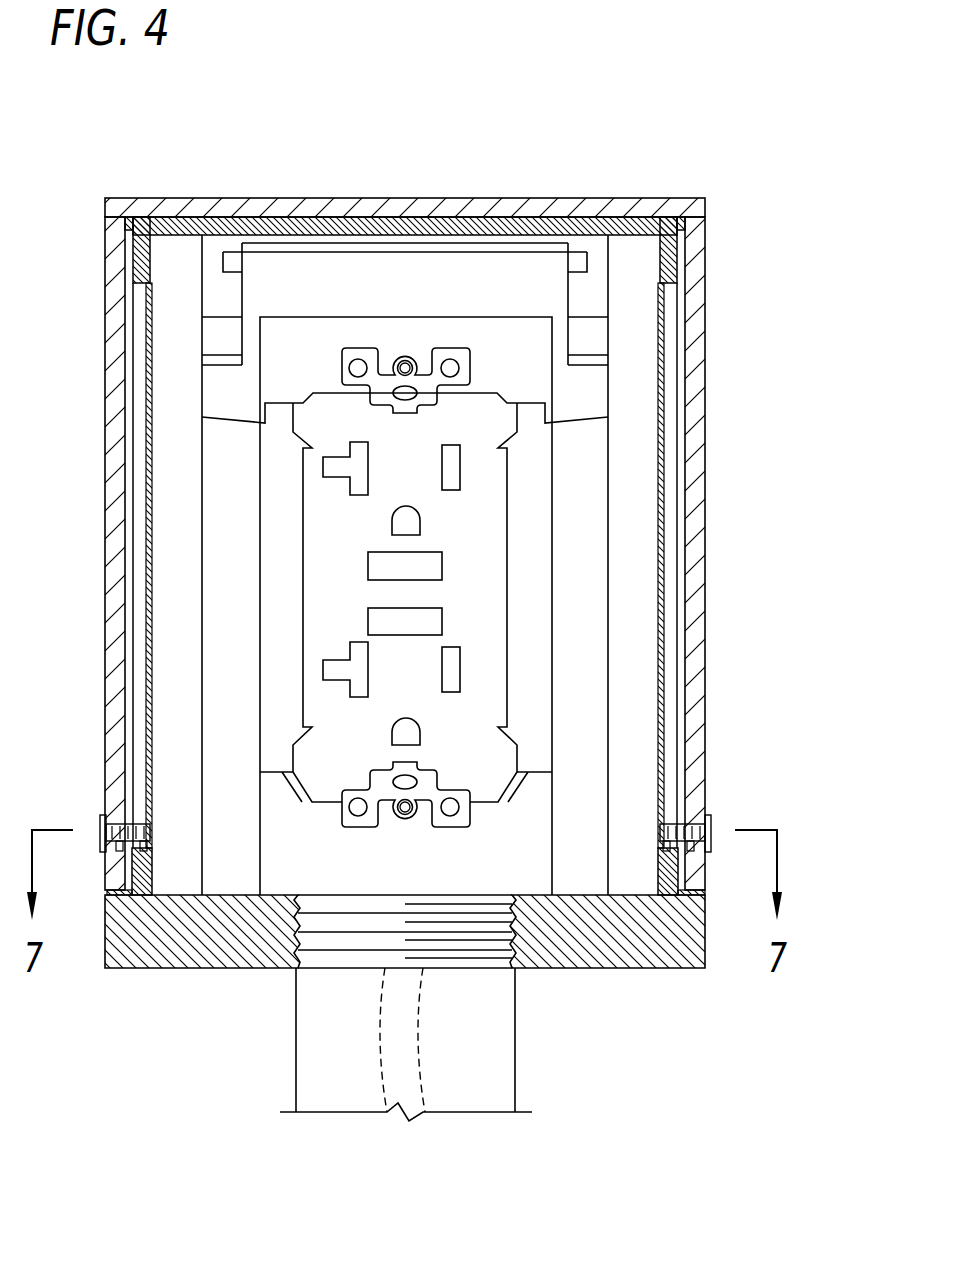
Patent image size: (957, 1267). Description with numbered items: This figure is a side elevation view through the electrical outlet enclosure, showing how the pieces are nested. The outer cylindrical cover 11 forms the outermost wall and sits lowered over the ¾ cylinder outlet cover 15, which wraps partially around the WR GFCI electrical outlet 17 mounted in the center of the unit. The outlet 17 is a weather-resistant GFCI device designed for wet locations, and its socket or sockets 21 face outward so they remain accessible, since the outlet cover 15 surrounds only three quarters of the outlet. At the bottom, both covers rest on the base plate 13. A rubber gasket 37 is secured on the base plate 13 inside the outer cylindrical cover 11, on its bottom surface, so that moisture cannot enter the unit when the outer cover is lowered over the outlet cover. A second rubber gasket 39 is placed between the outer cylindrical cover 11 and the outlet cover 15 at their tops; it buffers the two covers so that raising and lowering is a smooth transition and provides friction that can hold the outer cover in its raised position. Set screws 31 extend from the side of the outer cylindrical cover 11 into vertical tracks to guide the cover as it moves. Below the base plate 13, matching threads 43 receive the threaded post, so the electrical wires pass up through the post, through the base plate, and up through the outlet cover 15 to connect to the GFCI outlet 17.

The outer cylindrical cover 11 is at (693, 525).
The base plate 13 is at (595, 948).
The ¾ cylinder outlet cover 15 is at (660, 377).
The WR GFCI electrical outlet 17 is at (332, 603).
The socket 21 is at (452, 668).
The set screw 31 is at (711, 818).
The rubber gasket 37 is at (707, 893).
The second rubber gasket 39 is at (683, 223).
The threads 43 is at (298, 926).